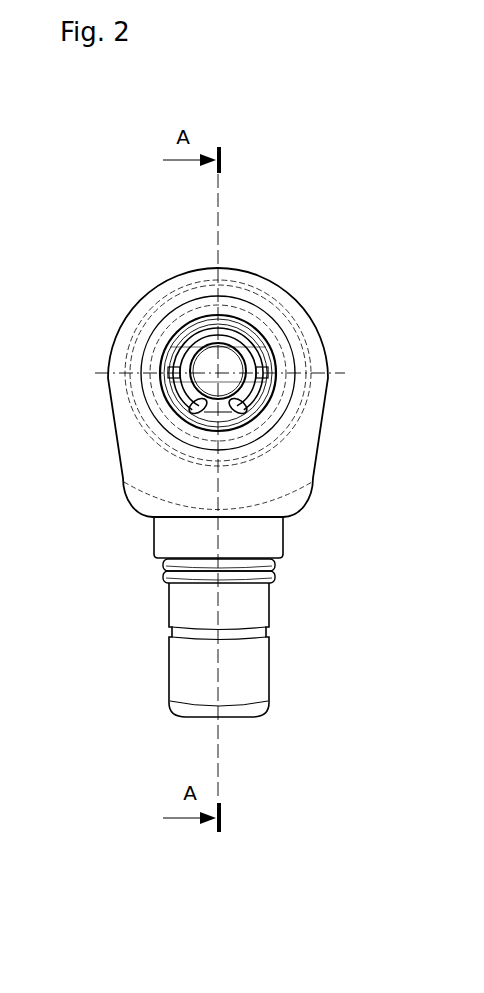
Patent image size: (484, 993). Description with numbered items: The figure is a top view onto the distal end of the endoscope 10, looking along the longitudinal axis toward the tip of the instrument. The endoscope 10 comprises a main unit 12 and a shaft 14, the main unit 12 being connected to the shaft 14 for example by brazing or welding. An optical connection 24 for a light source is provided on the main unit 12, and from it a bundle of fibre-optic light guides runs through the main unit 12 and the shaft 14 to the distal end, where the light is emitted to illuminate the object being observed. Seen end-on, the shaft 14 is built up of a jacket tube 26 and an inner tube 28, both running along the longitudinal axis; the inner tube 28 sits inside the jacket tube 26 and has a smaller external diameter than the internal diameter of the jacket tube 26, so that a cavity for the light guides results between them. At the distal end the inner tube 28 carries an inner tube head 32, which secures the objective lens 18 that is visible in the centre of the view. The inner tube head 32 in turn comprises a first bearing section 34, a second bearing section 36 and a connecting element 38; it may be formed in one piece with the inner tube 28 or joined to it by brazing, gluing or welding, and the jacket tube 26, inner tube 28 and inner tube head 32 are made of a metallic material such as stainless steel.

The endoscope 10 is at (125, 253).
The main unit 12 is at (246, 272).
The shaft 14 is at (277, 410).
The objective lens 18 is at (232, 360).
The optical connection 24 is at (198, 657).
The jacket tube 26 is at (253, 435).
The inner tube 28 is at (178, 355).
The inner tube head 32 is at (198, 323).
The first bearing section 34 is at (257, 360).
The second bearing section 36 is at (210, 423).
The connecting element 38 is at (193, 407).